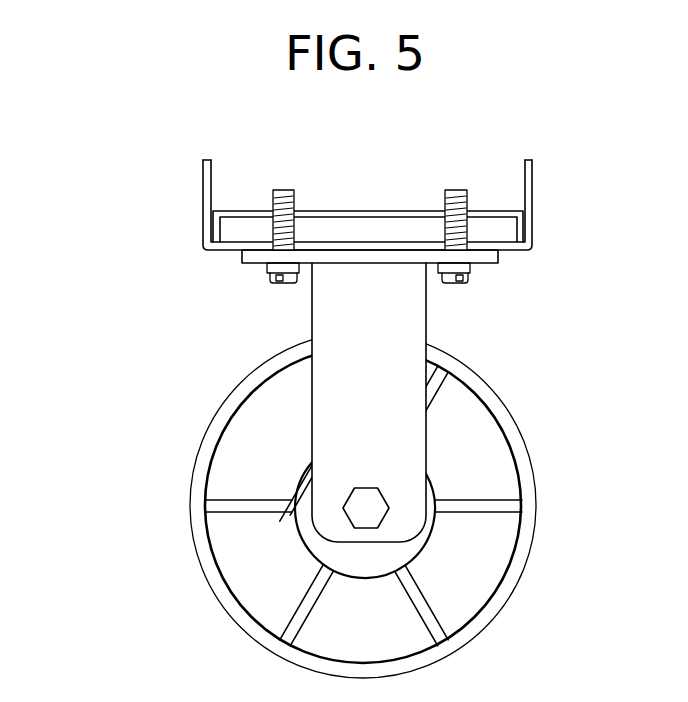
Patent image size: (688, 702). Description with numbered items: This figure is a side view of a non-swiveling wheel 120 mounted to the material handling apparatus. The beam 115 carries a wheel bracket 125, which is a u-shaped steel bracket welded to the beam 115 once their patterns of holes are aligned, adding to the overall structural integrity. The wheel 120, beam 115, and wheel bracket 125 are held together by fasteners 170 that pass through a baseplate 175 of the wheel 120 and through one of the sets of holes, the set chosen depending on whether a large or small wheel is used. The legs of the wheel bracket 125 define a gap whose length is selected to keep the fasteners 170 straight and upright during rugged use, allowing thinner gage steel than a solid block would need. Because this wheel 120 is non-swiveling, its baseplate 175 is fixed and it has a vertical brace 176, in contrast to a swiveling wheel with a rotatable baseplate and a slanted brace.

The beam 115 is at (200, 186).
The non-swiveling wheel 120 is at (195, 546).
The wheel bracket 125 is at (370, 211).
The fasteners 170 is at (278, 285).
The baseplate 175 is at (491, 268).
The vertical brace 176 is at (427, 327).